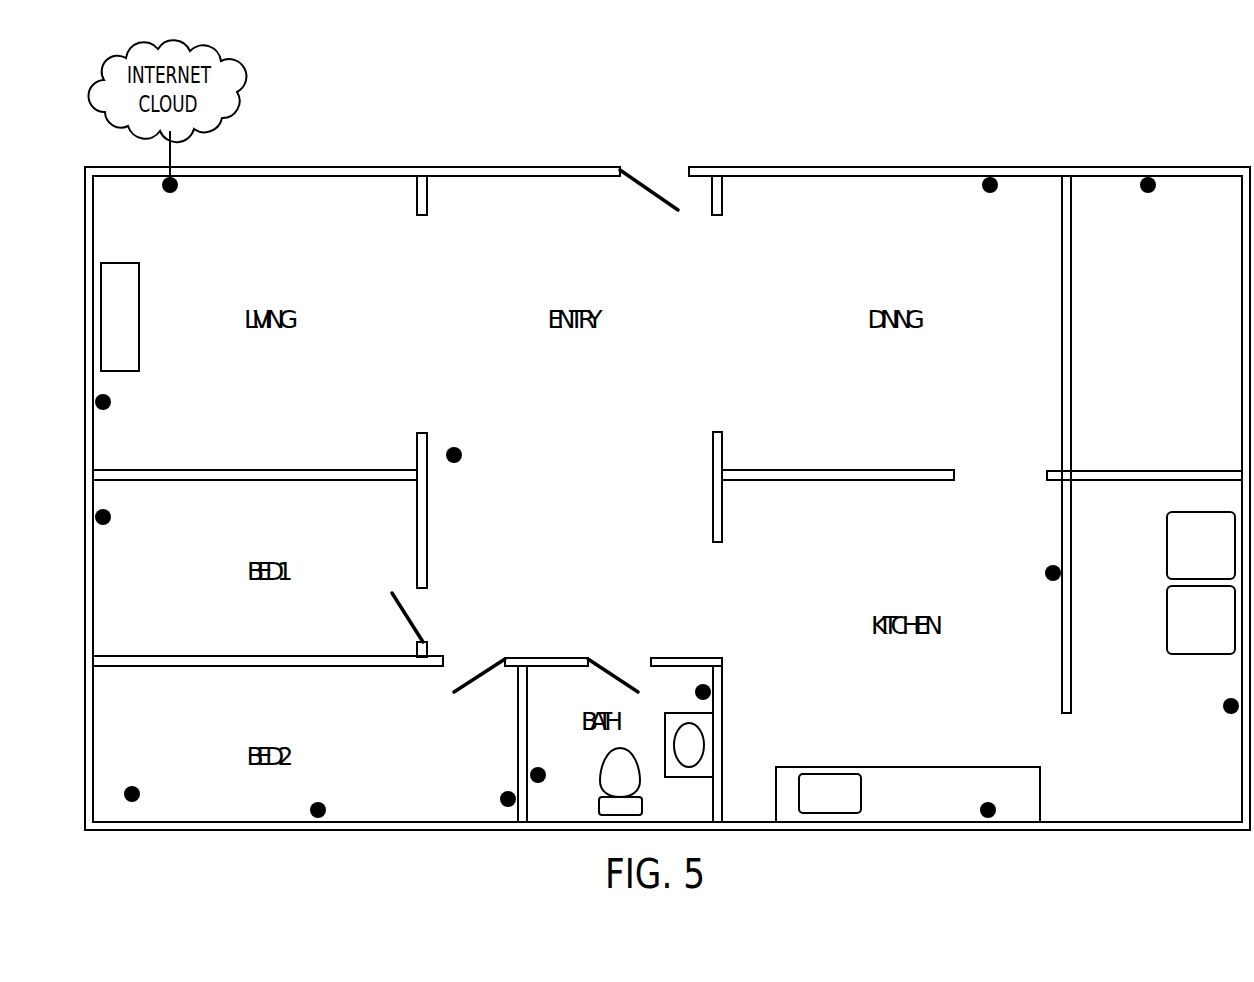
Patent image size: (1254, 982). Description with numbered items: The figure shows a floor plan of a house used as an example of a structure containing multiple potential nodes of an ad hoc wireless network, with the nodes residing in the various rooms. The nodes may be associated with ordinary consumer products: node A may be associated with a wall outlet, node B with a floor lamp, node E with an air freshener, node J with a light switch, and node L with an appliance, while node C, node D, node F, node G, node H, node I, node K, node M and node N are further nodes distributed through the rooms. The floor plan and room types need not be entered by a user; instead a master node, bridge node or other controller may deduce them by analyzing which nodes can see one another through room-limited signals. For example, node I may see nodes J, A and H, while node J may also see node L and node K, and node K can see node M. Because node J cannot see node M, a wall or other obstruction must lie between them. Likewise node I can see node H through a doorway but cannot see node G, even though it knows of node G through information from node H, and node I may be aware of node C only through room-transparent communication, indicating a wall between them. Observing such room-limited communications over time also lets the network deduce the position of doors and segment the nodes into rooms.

The node A is at (169, 193).
The node B is at (110, 399).
The node C is at (110, 514).
The node D is at (140, 790).
The node E is at (326, 806).
The node F is at (500, 796).
The node G is at (540, 767).
The node H is at (695, 691).
The node I is at (462, 451).
The node J is at (989, 193).
The node K is at (980, 806).
The node L is at (1045, 571).
The node M is at (1223, 704).
The node N is at (1147, 193).